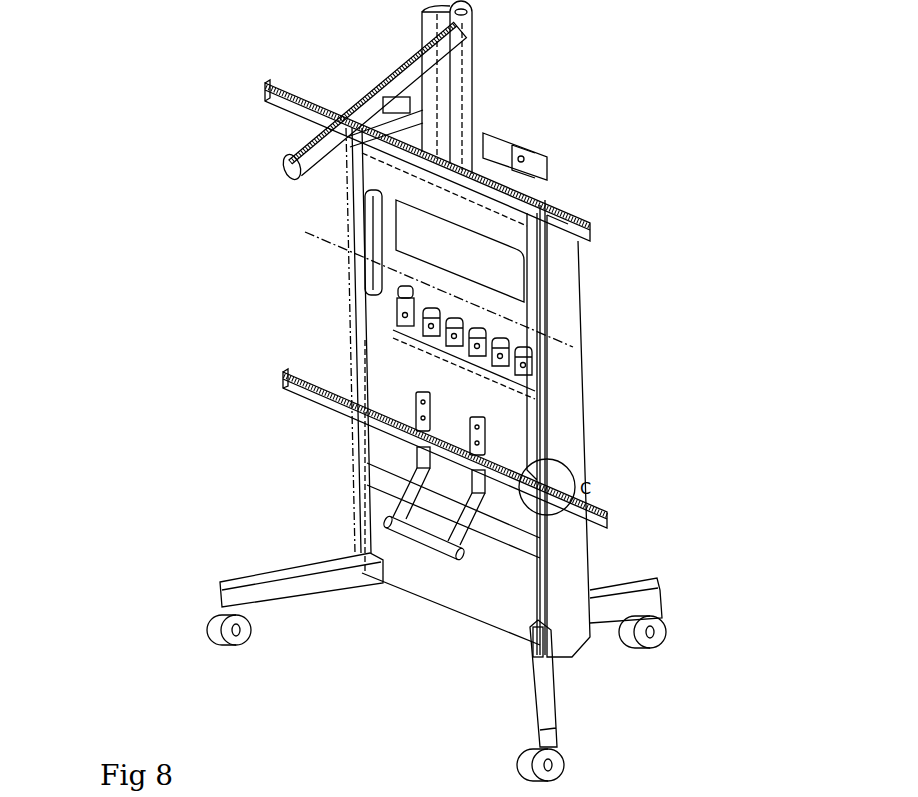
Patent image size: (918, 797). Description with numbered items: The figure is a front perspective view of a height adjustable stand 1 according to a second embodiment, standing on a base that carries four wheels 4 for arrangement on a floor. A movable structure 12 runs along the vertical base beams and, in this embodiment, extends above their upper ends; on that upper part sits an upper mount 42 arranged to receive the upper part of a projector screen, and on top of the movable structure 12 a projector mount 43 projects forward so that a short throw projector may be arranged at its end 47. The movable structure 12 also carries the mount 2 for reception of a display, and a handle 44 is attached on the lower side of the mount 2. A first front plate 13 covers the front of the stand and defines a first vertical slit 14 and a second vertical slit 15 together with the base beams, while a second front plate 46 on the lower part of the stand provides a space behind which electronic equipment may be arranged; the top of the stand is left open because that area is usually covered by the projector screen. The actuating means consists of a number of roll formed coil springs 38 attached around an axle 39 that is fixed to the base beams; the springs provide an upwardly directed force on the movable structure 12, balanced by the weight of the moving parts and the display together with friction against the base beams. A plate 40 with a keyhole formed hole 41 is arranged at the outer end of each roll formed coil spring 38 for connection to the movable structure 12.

The height adjustable stand 1 is at (169, 291).
The mount 2 is at (607, 520).
The wheels 4 is at (235, 640).
The movable structure 12 is at (457, 133).
The first front plate 13 is at (523, 438).
The first vertical slit 14 is at (363, 338).
The second vertical slit 15 is at (542, 418).
The roll formed coil springs 38 is at (505, 331).
The axle 39 is at (305, 232).
The plate 40 is at (402, 298).
The keyhole formed hole 41 is at (402, 289).
The upper mount 42 is at (587, 225).
The projector mount 43 is at (383, 90).
The handle 44 is at (411, 531).
The second front plate 46 is at (473, 583).
The end 47 is at (288, 154).